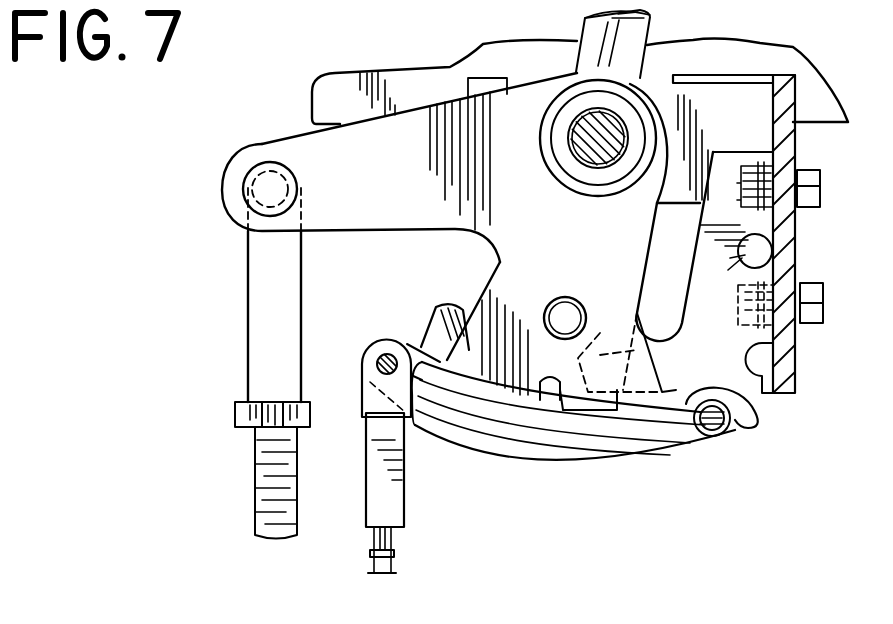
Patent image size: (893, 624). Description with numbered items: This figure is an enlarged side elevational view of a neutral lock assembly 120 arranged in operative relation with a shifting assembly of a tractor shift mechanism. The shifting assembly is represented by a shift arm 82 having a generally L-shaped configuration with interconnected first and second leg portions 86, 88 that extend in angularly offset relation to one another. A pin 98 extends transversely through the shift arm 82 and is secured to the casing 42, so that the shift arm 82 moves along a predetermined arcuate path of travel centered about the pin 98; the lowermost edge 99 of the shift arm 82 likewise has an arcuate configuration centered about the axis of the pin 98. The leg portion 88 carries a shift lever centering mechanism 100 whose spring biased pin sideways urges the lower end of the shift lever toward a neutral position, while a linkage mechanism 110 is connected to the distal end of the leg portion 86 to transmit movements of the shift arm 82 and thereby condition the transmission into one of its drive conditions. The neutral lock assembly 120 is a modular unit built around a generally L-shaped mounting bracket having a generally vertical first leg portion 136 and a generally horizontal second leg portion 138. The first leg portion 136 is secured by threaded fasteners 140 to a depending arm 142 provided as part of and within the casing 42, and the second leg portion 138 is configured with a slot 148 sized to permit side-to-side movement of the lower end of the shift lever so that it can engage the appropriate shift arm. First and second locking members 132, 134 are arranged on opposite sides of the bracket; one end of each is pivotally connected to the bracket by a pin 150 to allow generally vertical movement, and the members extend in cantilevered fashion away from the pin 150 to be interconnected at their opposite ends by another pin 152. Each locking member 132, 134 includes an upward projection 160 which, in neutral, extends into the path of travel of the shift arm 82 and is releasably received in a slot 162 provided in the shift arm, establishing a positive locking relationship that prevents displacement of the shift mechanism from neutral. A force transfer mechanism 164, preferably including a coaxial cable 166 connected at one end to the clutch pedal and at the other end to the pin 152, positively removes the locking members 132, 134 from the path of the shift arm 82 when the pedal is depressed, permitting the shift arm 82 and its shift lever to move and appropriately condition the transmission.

The casing 42 is at (400, 78).
The first shift arm 82 is at (214, 187).
The first leg portion 86 is at (345, 218).
The pin 98 is at (592, 150).
The shift lever centering mechanism 100 is at (578, 284).
The linkage mechanism 110 is at (240, 325).
The neutral lock assembly 120 is at (742, 500).
The first locking member 132 is at (674, 468).
The second locking member 134 is at (415, 433).
The first leg portion 136 is at (733, 258).
The second leg portion 138 is at (418, 347).
The threaded fasteners 140 is at (810, 193).
The depending arm 142 is at (787, 268).
The slot 148 is at (603, 365).
The pin 150 is at (713, 437).
The pin 152 is at (381, 357).
The upward projection 160 is at (540, 383).
The slot 162 is at (547, 403).
The force transfer mechanism 164 is at (356, 505).
The coaxial cable 166 is at (373, 567).
The second leg portion 88 is at (610, 377).
The edge 99 is at (490, 393).